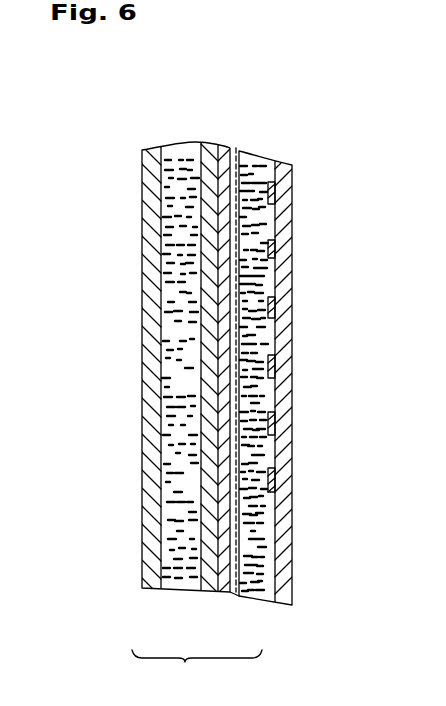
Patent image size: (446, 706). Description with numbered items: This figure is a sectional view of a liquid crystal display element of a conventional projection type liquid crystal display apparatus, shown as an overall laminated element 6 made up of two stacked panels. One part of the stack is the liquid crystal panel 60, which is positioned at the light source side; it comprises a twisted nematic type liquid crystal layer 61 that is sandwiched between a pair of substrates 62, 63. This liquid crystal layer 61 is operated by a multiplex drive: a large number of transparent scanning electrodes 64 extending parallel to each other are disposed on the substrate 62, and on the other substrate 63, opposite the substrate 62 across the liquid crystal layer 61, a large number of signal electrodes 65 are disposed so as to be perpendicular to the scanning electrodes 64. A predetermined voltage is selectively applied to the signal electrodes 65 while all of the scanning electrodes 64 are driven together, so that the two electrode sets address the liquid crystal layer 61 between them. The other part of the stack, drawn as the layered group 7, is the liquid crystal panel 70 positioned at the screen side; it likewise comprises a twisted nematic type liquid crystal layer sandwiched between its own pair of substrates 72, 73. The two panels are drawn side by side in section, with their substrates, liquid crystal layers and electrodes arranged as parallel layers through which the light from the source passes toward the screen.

The laminated sheet 6 is at (192, 698).
The first laminate 7 is at (172, 148).
The liquid crystal panel 60 is at (253, 603).
The liquid crystal layer 61 is at (267, 157).
The substrate 62 is at (292, 318).
The substrate 63 is at (230, 146).
The scanning electrodes 64 is at (277, 478).
The signal electrodes 65 is at (233, 593).
The liquid crystal panel 70 is at (167, 592).
The substrate 72 is at (210, 145).
The substrate 73 is at (157, 227).